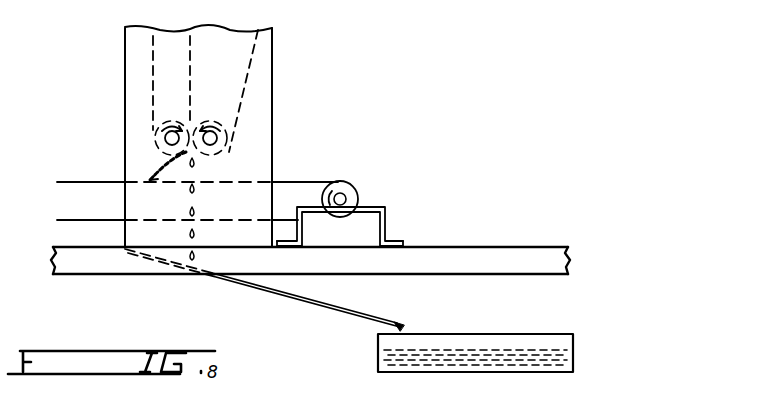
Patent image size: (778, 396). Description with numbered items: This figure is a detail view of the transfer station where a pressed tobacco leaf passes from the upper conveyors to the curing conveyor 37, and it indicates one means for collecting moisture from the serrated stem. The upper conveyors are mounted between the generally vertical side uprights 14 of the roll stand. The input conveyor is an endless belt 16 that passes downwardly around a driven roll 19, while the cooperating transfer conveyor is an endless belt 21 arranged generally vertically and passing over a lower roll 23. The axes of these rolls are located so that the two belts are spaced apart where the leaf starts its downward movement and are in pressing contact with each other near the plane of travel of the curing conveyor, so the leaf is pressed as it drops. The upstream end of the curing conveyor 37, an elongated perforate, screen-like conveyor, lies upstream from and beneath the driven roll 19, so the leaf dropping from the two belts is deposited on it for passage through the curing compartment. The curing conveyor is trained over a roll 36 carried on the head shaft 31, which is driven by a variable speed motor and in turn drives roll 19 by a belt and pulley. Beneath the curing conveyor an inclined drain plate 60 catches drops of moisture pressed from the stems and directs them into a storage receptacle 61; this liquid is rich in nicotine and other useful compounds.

The side upright 14 is at (266, 87).
The belt 16 is at (243, 80).
The endless belt 21 is at (191, 60).
The lower roll 23 is at (155, 141).
The driven roll 19 is at (231, 145).
The curing conveyor 37 is at (66, 182).
The head shaft 31 is at (338, 192).
The roll 36 is at (359, 197).
The inclined drain plate 60 is at (316, 302).
The storage receptacle 61 is at (440, 362).